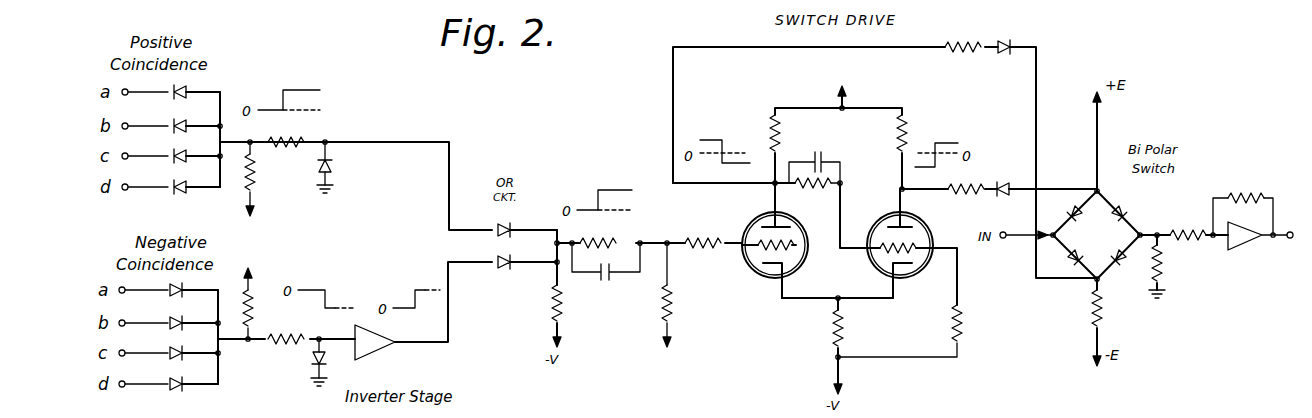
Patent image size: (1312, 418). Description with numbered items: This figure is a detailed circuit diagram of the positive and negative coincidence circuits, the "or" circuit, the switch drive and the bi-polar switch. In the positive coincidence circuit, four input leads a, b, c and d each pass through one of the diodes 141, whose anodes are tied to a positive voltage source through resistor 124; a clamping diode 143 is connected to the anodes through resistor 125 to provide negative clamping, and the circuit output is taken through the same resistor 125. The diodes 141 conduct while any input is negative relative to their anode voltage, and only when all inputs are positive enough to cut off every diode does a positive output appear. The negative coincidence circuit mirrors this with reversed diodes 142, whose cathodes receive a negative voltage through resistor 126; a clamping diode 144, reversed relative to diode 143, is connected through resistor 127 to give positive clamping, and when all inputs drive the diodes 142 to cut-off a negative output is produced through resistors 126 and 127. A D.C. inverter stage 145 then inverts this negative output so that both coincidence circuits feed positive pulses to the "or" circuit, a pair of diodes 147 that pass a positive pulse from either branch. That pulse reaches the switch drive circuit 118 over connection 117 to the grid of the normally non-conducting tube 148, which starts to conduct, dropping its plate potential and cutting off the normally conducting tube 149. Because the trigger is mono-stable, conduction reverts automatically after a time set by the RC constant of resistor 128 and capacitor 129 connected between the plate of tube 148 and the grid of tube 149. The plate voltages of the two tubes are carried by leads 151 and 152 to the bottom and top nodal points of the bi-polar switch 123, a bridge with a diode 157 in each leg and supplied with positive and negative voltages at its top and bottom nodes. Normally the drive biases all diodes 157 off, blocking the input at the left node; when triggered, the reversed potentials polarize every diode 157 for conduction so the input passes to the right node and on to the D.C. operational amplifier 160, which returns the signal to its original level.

The diodes 141 is at (183, 125).
The diodes 142 is at (183, 326).
The resistor 124 is at (256, 170).
The resistor 125 is at (302, 138).
The resistor 126 is at (254, 312).
The resistor 127 is at (283, 346).
The diode 143 is at (333, 170).
The diode 144 is at (310, 372).
The D.C. inverter stage 145 is at (386, 351).
The diodes 147 is at (498, 228).
The connection 117 is at (660, 240).
The switch drive circuit 118 is at (762, 94).
The resistor 128 is at (827, 185).
The capacitor 129 is at (828, 138).
The tube 148 is at (766, 278).
The tube 149 is at (927, 276).
The lead 151 is at (724, 28).
The lead 152 is at (1052, 188).
The bi-polar switch 123 is at (1097, 251).
The diode 157 is at (1130, 292).
The D.C. operational amplifier 160 is at (1250, 250).